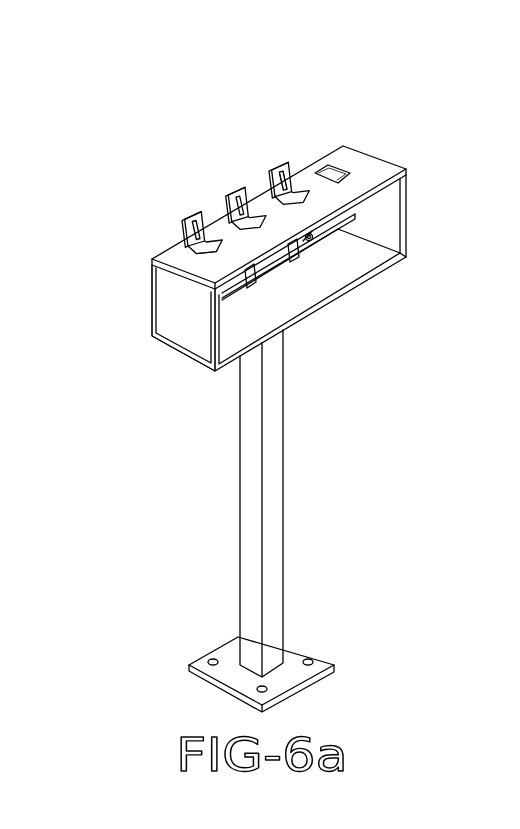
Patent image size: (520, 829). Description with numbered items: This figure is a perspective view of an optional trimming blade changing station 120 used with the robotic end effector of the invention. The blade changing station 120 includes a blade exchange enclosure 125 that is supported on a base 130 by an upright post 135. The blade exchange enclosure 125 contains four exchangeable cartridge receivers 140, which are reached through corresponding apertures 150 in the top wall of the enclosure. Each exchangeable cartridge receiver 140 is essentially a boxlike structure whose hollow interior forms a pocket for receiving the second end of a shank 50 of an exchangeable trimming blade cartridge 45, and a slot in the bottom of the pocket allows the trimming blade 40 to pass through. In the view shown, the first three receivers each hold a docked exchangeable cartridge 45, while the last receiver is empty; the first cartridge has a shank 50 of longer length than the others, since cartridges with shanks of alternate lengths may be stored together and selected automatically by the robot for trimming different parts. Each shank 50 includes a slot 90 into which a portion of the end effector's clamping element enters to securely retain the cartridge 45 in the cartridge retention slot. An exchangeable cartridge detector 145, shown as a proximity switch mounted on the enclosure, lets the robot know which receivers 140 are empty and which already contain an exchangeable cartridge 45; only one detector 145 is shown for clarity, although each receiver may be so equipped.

The trimming blade changing station 120 is at (95, 163).
The blade exchange enclosure 125 is at (188, 331).
The base 130 is at (300, 653).
The upright post 135 is at (277, 541).
The exchangeable cartridge receiver 140 is at (357, 215).
The exchangeable cartridge detector 145 is at (312, 240).
The trimming blade 40 is at (250, 288).
The exchangeable trimming blade cartridge 45 is at (180, 212).
The shank 50 is at (190, 230).
The slot 90 is at (293, 166).
The aperture 150 is at (326, 167).